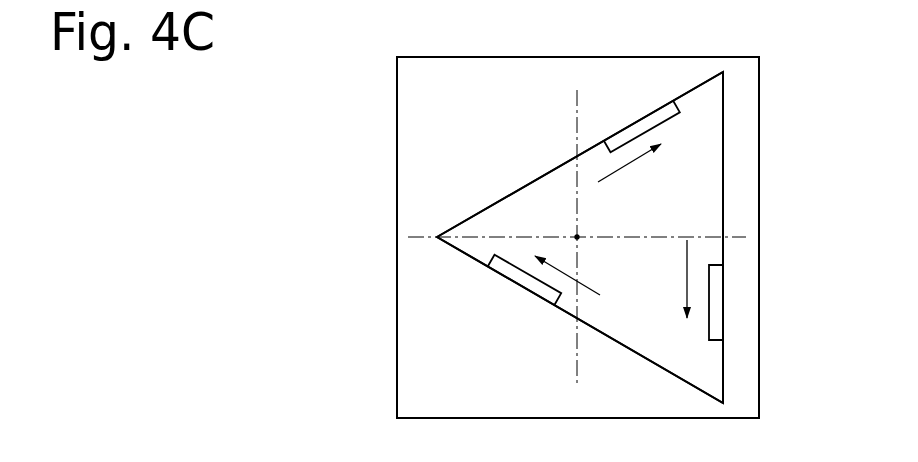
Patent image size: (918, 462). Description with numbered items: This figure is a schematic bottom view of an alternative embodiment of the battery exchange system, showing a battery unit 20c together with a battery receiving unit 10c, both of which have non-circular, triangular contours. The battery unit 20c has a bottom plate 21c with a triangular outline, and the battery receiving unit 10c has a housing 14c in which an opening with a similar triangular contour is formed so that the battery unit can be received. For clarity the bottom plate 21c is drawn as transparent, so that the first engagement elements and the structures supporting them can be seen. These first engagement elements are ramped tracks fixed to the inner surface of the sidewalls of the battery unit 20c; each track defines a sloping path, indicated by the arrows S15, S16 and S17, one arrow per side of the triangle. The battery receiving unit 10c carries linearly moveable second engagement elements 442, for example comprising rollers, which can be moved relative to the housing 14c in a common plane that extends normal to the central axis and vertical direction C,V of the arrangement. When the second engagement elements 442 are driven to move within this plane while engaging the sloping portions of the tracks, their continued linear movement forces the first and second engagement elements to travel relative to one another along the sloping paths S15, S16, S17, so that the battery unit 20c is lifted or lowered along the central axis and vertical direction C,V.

The battery receiving unit 10c is at (735, 139).
The housing 14c is at (737, 165).
The battery unit 20c is at (627, 312).
The bottom plate 21c is at (723, 115).
The reflective surface 442 is at (513, 193).
The sloping path S15 is at (646, 180).
The sloping path S16 is at (691, 263).
The sloping path S17 is at (590, 289).
The center / vertical axis C,V is at (579, 236).